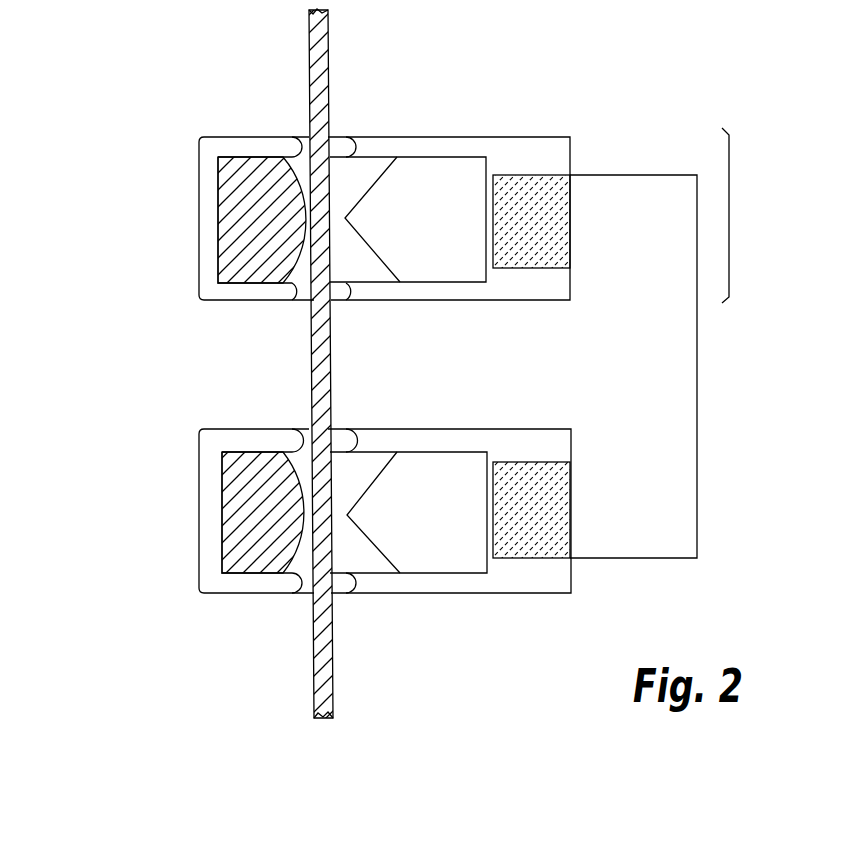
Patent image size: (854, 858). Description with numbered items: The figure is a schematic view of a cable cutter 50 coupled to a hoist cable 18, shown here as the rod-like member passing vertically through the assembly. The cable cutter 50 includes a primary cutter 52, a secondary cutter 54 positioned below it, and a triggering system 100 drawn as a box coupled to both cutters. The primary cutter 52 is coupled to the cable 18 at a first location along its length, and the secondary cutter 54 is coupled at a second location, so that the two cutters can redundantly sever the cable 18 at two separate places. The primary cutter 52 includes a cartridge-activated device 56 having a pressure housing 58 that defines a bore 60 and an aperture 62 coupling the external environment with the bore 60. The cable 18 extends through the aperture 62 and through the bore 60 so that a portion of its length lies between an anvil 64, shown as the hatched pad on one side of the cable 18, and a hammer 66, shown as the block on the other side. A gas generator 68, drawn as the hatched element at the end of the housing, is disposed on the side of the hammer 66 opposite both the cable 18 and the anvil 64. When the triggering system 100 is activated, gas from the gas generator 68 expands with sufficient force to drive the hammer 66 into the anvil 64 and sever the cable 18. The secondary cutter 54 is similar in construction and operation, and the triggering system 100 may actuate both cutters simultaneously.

The cable 18 is at (317, 650).
The cable cutter 50 is at (146, 176).
The primary cutter 52 is at (432, 80).
The secondary cutter 54 is at (412, 605).
The cartridge-activated device 56 is at (732, 218).
The pressure housing 58 is at (445, 147).
The bore 60 is at (348, 187).
The aperture 62 is at (307, 135).
The anvil 64 is at (242, 268).
The hammer 66 is at (432, 263).
The gas generator 68 is at (532, 180).
The triggering system 100 is at (633, 366).